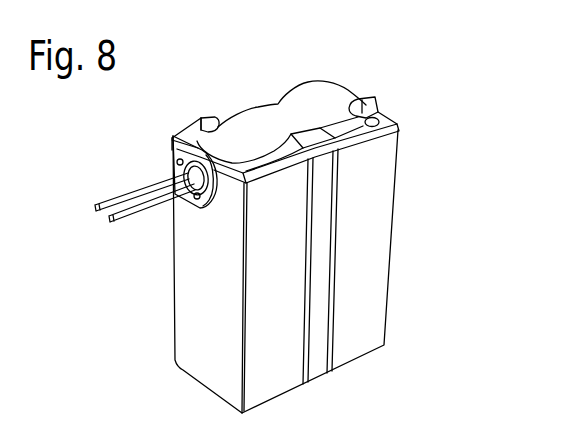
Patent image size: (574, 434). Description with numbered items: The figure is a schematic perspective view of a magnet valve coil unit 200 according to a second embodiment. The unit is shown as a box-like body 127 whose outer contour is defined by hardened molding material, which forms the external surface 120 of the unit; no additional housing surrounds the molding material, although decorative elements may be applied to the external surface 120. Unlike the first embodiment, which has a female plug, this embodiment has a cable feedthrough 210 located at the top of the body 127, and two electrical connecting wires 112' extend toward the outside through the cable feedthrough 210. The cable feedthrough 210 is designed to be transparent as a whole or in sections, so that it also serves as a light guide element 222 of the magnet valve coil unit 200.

The magnet valve coil unit 200 is at (405, 68).
The external surface 120 is at (386, 154).
The body 127 is at (399, 248).
The cable feedthrough 210 is at (167, 150).
The light guide element 222 is at (205, 207).
The electrical connecting wires 112' is at (127, 186).